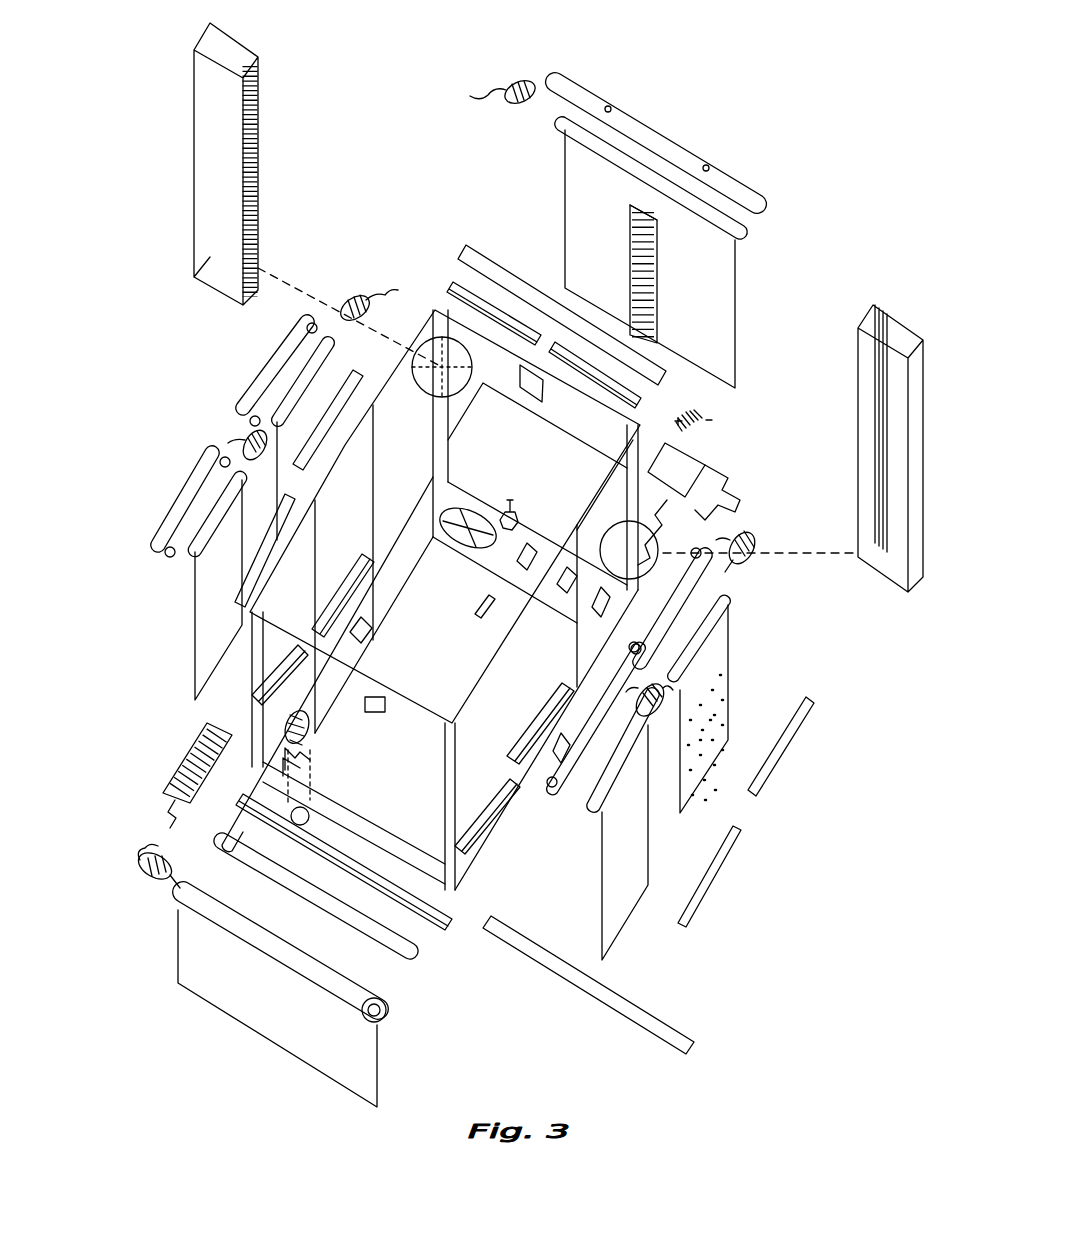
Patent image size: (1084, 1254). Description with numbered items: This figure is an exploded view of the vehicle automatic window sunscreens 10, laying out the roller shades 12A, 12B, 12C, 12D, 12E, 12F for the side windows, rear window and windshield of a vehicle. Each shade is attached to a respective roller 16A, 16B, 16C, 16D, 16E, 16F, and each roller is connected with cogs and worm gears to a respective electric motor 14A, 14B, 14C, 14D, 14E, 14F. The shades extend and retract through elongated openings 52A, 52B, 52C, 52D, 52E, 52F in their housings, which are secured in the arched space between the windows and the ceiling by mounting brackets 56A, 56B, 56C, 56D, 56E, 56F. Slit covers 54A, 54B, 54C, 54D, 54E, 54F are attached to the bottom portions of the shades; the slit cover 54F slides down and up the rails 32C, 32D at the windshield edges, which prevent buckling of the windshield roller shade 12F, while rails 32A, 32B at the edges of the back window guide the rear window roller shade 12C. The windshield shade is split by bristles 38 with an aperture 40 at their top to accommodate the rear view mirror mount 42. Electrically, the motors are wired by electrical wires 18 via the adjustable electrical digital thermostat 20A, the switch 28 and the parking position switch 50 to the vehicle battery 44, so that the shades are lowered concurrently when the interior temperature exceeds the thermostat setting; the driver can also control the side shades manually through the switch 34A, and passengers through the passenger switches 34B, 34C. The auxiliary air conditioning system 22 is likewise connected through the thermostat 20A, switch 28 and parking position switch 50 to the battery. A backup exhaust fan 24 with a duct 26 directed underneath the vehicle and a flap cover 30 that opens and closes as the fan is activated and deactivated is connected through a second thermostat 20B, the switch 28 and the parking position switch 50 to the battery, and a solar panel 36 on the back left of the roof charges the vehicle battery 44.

The vehicle automatic window sunscreens 10 is at (836, 950).
The roller shade 12A is at (366, 400).
The roller shade 12B is at (195, 625).
The roller shade 12C is at (286, 1010).
The roller shade 12D is at (618, 935).
The roller shade 12E is at (728, 640).
The roller shade 12F is at (735, 318).
The electric motor 14A is at (343, 300).
The electric motor 14B is at (240, 448).
The electric motor 14C is at (140, 865).
The electric motor 14D is at (640, 695).
The electric motor 14E is at (755, 548).
The electric motor 14F is at (517, 85).
The roller 16A is at (300, 378).
The roller 16B is at (205, 495).
The roller 16C is at (260, 948).
The roller 16D is at (632, 795).
The roller 16E is at (728, 592).
The roller 16F is at (613, 148).
The electrical wires 18 is at (723, 478).
The adjustable electrical digital thermostat 20A is at (578, 580).
The thermostat 20B is at (375, 712).
The auxiliary air conditioning system 22 is at (593, 612).
The backup exhaust fan 24 is at (312, 738).
The duct 26 is at (310, 816).
The switch 28 is at (522, 512).
The flap cover 30 is at (305, 755).
The rail 32A is at (220, 728).
The rail 32B is at (335, 760).
The rail 32C is at (858, 388).
The rail 32D is at (258, 130).
The switch/button 34A is at (532, 545).
The passenger switch 34B is at (372, 635).
The passenger switch 34C is at (550, 770).
The solar panel 36 is at (185, 760).
The bristles 38 is at (657, 273).
The aperture 40 is at (655, 222).
The rear view mirror mount 42 is at (543, 395).
The vehicle battery 44 is at (718, 418).
The parking (P) position switch 50 is at (478, 608).
The elongated opening 52A is at (330, 420).
The elongated opening 52B is at (260, 578).
The elongated opening 52C is at (680, 1030).
The elongated opening 52D is at (715, 862).
The elongated opening 52E is at (785, 750).
The elongated opening 52F is at (665, 380).
The slit cover 54A is at (342, 585).
The slit cover 54B is at (282, 675).
The slit cover 54C is at (398, 838).
The slit cover 54D is at (490, 810).
The slit cover 54E is at (538, 728).
The slit cover 54F is at (457, 288).
The mounting bracket 56A is at (258, 385).
The mounting bracket 56B is at (170, 510).
The mounting bracket 56C is at (353, 887).
The mounting bracket 56D is at (565, 800).
The mounting bracket 56E is at (660, 565).
The mounting bracket 56F is at (627, 112).